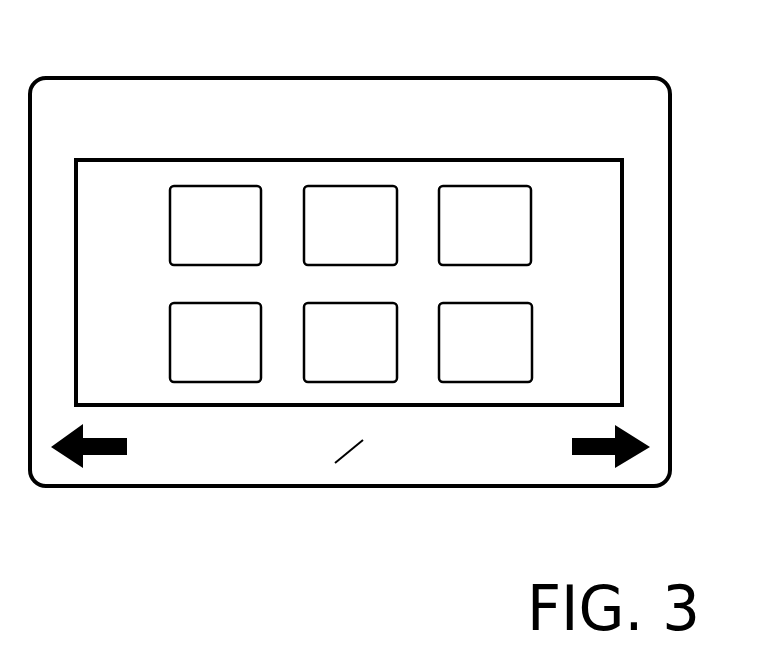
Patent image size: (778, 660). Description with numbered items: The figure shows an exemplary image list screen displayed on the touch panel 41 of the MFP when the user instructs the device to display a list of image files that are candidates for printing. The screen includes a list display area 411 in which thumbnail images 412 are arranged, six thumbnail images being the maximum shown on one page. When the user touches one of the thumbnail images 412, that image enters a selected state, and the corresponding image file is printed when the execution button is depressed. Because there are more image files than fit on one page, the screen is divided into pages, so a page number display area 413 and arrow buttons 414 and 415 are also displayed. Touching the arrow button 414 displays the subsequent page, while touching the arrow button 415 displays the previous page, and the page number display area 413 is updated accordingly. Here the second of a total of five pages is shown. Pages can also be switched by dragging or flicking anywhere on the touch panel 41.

The touch panel 41 is at (98, 78).
The list display area 411 is at (575, 160).
The thumbnail images 412 is at (492, 186).
The page number display area 413 is at (346, 472).
The arrow button 414 is at (110, 455).
The arrow button 415 is at (595, 455).